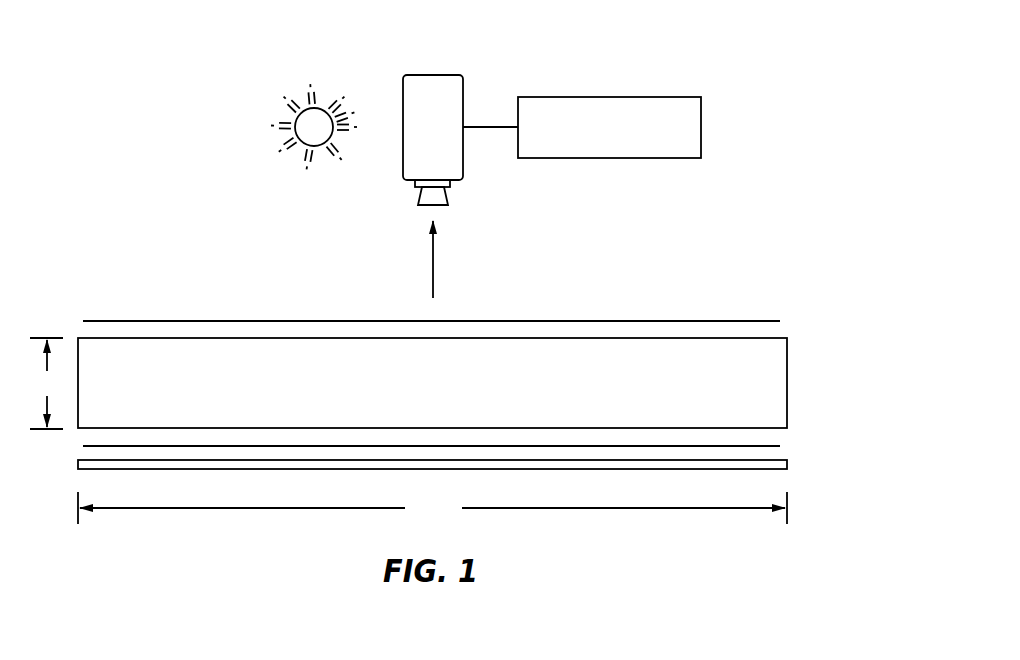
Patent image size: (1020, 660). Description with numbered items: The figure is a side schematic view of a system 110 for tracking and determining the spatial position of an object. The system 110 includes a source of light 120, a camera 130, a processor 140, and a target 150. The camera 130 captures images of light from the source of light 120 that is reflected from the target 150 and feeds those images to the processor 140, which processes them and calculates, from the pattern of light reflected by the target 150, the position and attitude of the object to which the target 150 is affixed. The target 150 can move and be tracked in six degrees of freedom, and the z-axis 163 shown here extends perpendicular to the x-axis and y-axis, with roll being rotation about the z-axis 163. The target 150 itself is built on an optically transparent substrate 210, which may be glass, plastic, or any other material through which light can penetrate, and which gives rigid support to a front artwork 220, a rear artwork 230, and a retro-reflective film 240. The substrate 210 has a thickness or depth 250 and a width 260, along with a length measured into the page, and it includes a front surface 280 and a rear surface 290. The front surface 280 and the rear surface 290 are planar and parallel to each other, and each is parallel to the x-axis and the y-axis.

The system 110 is at (95, 92).
The source of light 120 is at (296, 129).
The camera 130 is at (455, 92).
The processor 140 is at (635, 97).
The target 150 is at (55, 323).
The z-axis 163 is at (434, 268).
The optically transparent substrate 210 is at (757, 380).
The front artwork 220 is at (710, 320).
The rear artwork 230 is at (775, 447).
The retro-reflective film 240 is at (787, 467).
The thickness 250 is at (46, 383).
The width 260 is at (432, 508).
The front surface 280 is at (432, 338).
The rear surface 290 is at (496, 431).